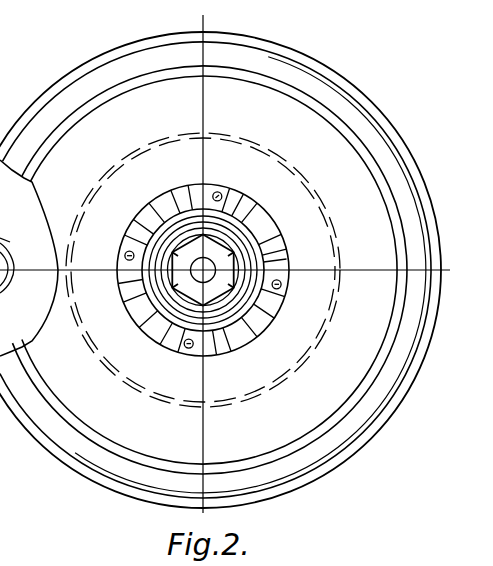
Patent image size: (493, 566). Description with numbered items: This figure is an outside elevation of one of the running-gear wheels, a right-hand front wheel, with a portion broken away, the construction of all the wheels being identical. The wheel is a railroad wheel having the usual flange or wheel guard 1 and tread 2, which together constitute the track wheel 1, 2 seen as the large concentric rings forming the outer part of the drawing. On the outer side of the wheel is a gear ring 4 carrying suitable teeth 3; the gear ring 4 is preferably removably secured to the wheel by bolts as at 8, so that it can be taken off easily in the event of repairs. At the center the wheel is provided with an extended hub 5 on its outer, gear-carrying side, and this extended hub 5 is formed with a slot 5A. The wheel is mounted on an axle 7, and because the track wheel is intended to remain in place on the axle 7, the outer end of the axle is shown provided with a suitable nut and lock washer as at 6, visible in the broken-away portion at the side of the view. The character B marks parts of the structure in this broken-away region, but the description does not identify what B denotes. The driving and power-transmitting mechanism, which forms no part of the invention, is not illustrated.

The flange or wheel guard 1 is at (363, 98).
The tread 2 is at (404, 157).
The teeth 3 is at (250, 205).
The gear ring 4 is at (268, 227).
The extended hub 5 is at (286, 259).
The slot 5A is at (213, 211).
The nut and lock washer 6 is at (2, 236).
The axle 7 is at (10, 261).
The bolts 8 is at (281, 286).
The bracket arm B is at (1, 239).